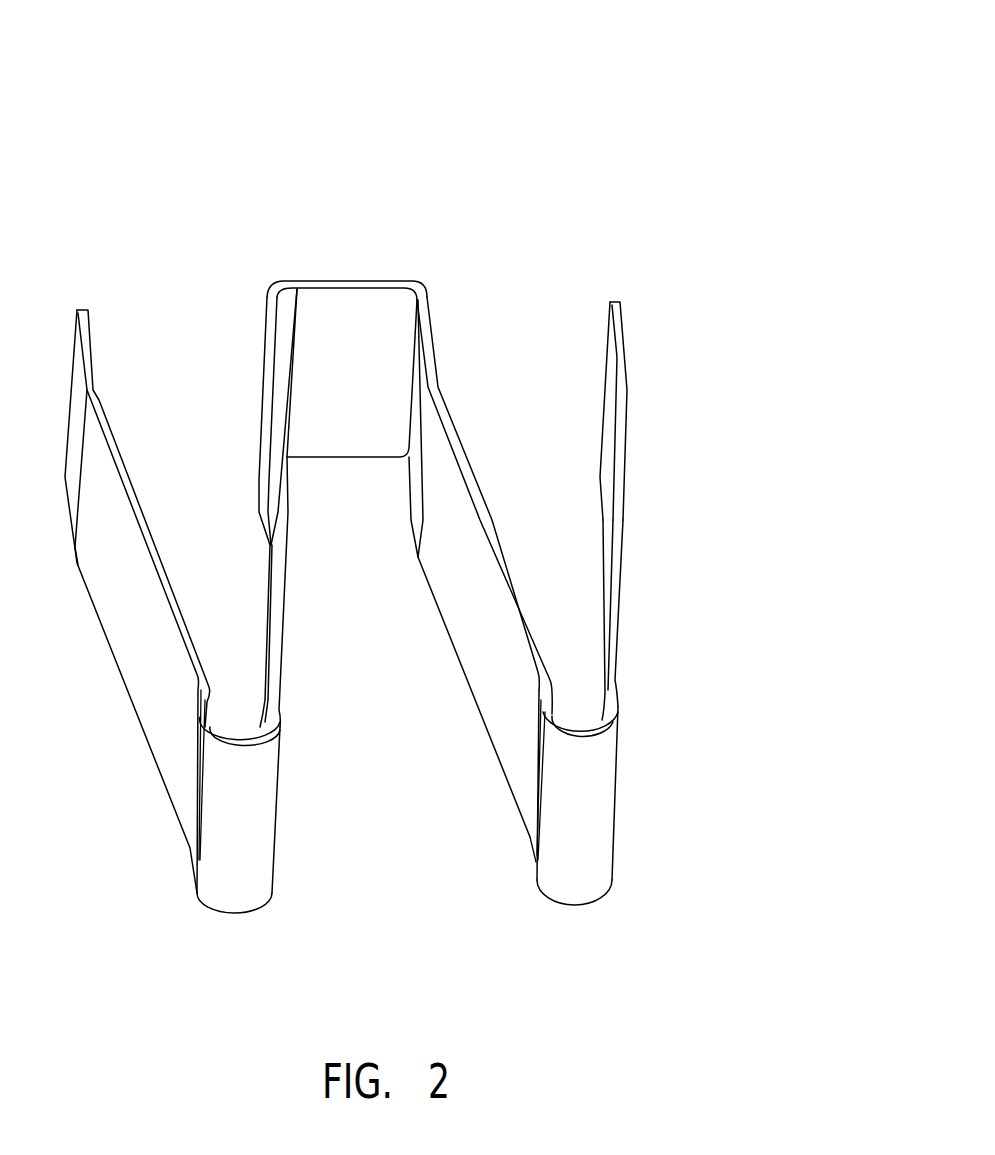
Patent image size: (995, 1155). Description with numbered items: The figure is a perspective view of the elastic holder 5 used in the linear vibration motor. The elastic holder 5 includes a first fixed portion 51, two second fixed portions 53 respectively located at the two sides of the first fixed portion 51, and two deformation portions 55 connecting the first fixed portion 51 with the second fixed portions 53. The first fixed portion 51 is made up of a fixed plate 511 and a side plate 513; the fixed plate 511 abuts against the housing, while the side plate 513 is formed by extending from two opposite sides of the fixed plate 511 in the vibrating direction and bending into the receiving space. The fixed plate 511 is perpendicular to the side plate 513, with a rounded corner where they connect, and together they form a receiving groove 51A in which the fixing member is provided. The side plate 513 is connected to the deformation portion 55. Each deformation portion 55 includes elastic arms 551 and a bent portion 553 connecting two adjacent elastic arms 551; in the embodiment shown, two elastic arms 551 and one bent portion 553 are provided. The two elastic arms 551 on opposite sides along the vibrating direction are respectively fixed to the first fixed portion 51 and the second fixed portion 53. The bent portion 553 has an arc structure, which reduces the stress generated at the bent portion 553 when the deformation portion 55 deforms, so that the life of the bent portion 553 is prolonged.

The elastic holder 5 is at (393, 33).
The first fixed portion 51 is at (492, 145).
The fixed plate 511 is at (323, 288).
The side plate 513 is at (428, 348).
The receiving groove 51A is at (351, 379).
The second fixed portion 53 is at (621, 342).
The deformation portion 55 is at (783, 600).
The elastic arm 551 is at (621, 568).
The bent portion 553 is at (598, 783).